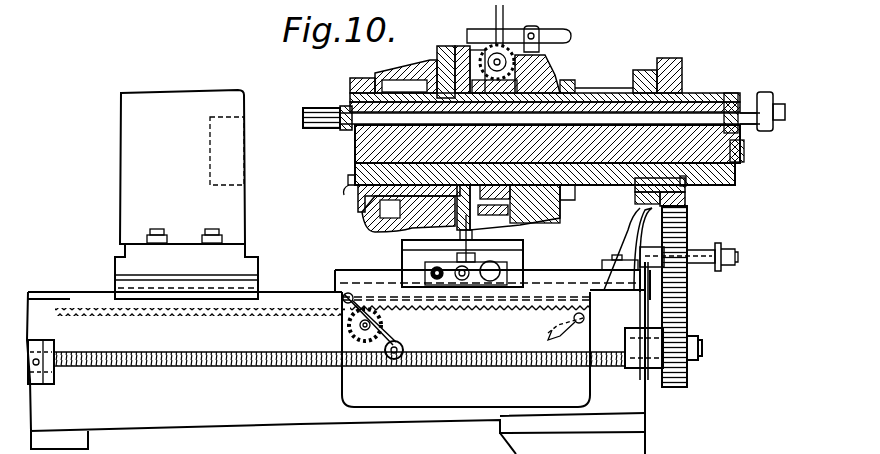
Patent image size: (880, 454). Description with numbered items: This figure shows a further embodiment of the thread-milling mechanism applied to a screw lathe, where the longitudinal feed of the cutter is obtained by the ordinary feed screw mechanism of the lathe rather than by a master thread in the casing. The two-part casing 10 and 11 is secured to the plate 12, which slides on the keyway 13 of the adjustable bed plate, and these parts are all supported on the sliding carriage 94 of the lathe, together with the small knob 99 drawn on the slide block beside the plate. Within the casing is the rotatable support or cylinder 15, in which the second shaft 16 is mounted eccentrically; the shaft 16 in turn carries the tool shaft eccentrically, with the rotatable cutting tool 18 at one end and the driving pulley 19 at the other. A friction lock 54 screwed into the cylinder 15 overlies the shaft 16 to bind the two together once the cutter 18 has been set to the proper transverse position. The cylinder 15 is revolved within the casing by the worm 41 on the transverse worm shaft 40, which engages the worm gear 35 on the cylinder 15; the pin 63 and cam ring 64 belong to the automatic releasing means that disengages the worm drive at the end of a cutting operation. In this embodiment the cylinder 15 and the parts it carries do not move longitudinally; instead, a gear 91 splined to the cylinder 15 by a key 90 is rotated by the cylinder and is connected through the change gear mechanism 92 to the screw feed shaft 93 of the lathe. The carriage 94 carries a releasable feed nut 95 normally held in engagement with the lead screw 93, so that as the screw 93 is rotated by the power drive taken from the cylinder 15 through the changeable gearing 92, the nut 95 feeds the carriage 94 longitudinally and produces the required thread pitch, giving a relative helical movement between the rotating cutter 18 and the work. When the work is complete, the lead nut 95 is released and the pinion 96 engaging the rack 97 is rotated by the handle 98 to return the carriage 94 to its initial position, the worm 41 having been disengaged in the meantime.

The casing part 10 is at (446, 228).
The casing part 11 is at (477, 238).
The plate 12 is at (473, 265).
The keyway 13 is at (462, 263).
The rotatable support 15 is at (738, 166).
The second shaft 16 is at (744, 150).
The rotatable cutting tool 18 is at (318, 108).
The pulley 19 is at (765, 92).
The gear 35 is at (518, 226).
The worm shaft 40 is at (492, 50).
The worm 41 is at (512, 52).
The friction lock 54 is at (350, 180).
The pin 63 is at (460, 46).
The cam ring 64 is at (440, 62).
The key 90 is at (684, 186).
The gear 91 is at (688, 203).
The change gear mechanism 92 is at (689, 296).
The screw feed shaft 93 is at (100, 353).
The sliding carriage 94 is at (546, 270).
The releasable feed nut 95 is at (546, 333).
The pinion 96 is at (382, 318).
The rack 97 is at (299, 322).
The handle 98 is at (344, 302).
The knob 99 is at (430, 270).